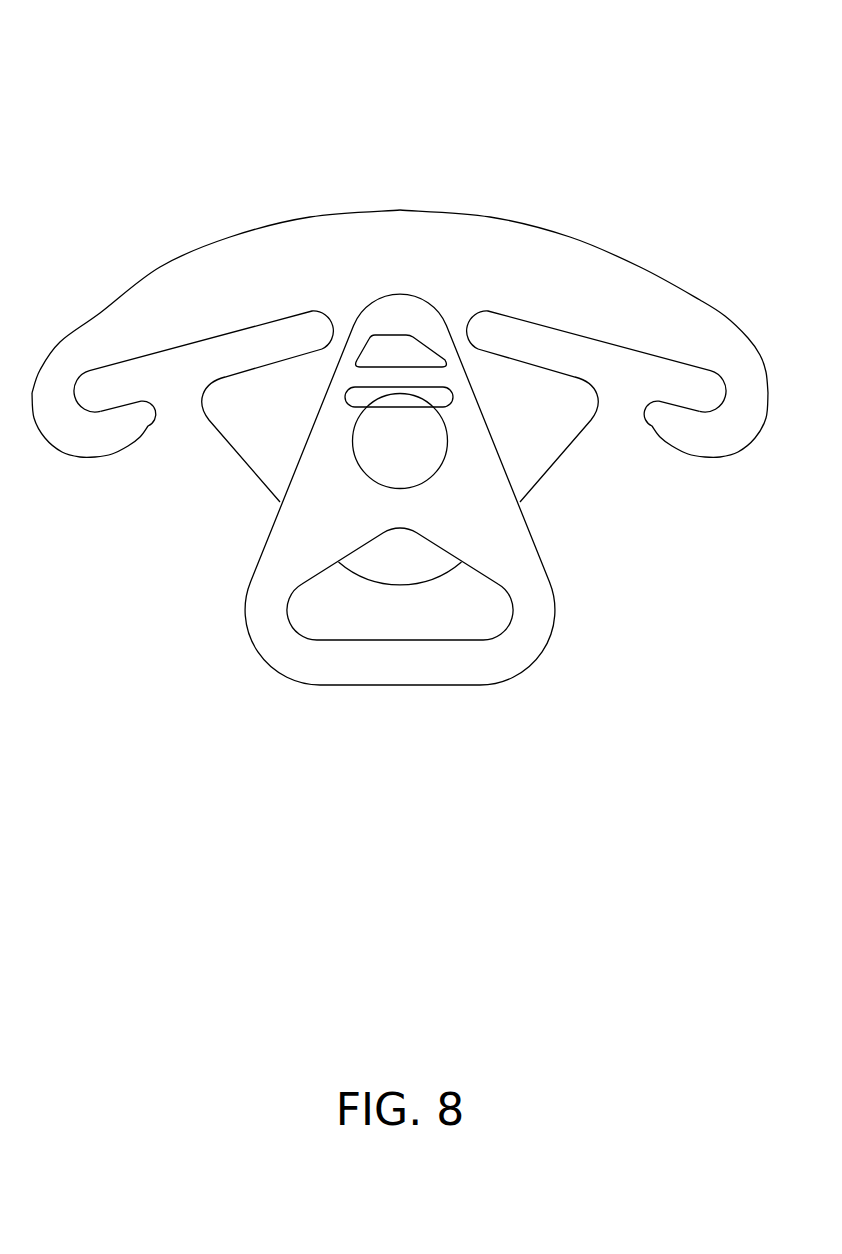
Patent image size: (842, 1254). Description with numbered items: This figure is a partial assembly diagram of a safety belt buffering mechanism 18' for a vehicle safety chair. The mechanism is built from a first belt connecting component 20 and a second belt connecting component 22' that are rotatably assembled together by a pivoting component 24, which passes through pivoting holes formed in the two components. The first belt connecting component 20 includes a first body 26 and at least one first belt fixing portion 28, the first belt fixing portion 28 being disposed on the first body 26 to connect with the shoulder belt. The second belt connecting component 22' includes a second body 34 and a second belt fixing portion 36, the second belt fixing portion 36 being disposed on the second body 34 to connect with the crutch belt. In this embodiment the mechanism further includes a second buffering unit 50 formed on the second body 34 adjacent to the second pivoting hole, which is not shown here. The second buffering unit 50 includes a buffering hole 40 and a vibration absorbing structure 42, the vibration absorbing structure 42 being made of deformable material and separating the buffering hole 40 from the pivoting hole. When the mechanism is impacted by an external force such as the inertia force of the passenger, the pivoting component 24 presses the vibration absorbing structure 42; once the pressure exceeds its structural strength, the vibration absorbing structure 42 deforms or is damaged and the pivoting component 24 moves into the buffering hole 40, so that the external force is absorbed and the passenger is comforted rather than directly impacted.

The safety belt buffering mechanism 18' is at (403, 437).
The first belt connecting component 20 is at (400, 432).
The second belt connecting component 22' is at (400, 569).
The pivoting component 24 is at (383, 460).
The first body 26 is at (553, 427).
The first belt fixing portion 28 is at (697, 433).
The second body 34 is at (480, 520).
The second belt fixing portion 36 is at (363, 663).
The buffering hole 40 is at (388, 345).
The vibration absorbing structure 42 is at (383, 377).
The second buffering unit 50 is at (345, 243).